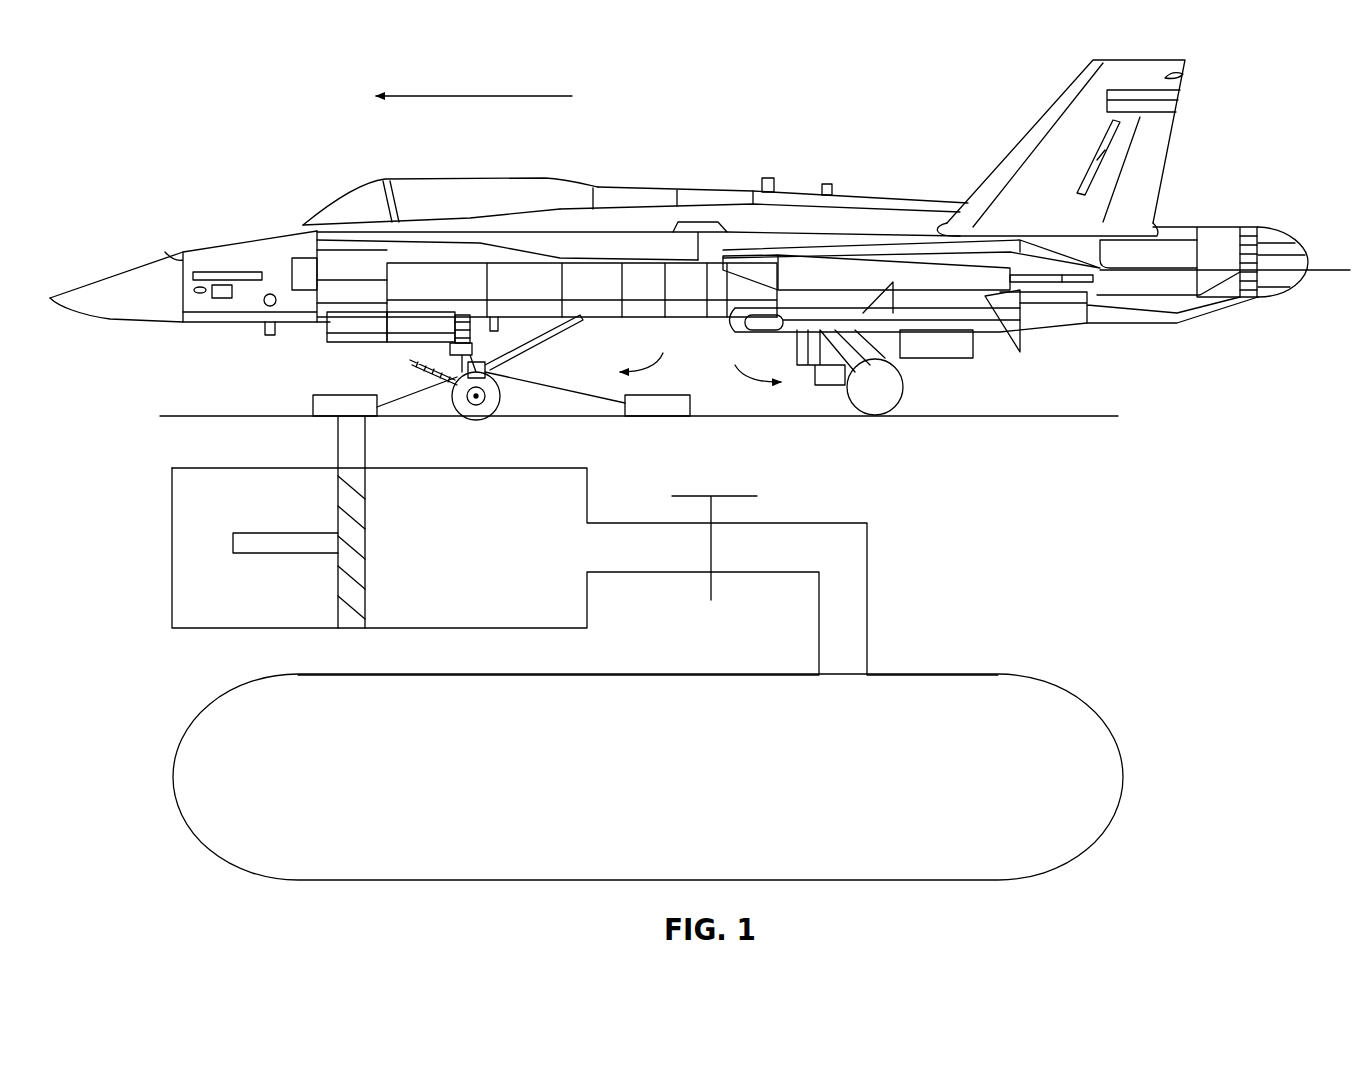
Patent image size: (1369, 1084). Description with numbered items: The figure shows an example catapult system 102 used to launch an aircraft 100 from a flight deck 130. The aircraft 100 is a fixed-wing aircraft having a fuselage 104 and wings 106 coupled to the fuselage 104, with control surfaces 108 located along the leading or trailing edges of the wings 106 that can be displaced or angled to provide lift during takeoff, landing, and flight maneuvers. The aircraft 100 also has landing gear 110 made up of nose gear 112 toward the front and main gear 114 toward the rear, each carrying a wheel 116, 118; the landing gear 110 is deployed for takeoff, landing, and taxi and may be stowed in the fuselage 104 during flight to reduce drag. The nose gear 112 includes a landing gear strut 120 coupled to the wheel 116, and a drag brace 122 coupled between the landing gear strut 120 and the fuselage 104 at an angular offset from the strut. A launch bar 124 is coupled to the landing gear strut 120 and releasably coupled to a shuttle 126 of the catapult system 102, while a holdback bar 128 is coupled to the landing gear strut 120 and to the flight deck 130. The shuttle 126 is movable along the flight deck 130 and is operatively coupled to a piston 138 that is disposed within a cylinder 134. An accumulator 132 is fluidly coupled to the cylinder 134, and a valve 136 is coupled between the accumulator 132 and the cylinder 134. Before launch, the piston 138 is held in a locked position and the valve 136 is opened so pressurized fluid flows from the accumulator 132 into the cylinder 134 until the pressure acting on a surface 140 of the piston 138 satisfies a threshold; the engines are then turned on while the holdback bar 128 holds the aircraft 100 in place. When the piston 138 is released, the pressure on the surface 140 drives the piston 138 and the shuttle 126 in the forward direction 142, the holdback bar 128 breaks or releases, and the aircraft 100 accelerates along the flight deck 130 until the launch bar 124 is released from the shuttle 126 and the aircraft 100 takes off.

The aircraft 100 is at (247, 150).
The catapult system 102 is at (131, 404).
The fuselage 104 is at (598, 186).
The wings 106 is at (900, 232).
The control surfaces 108 is at (748, 248).
The landing gear 110 is at (246, 381).
The nose gear 112 is at (650, 349).
The main gear 114 is at (746, 360).
The wheel 116 is at (478, 423).
The wheel 118 is at (877, 418).
The landing gear strut 120 is at (412, 362).
The drag brace 122 is at (512, 353).
The launch bar 124 is at (393, 400).
The shuttle 126 is at (335, 394).
The holdback bar 128 is at (583, 398).
The flight deck 130 is at (1048, 416).
The accumulator 132 is at (171, 785).
The cylinder 134 is at (172, 572).
The valve 136 is at (737, 495).
The piston 138 is at (352, 628).
The surface 140 is at (363, 558).
The forward direction 142 is at (507, 97).